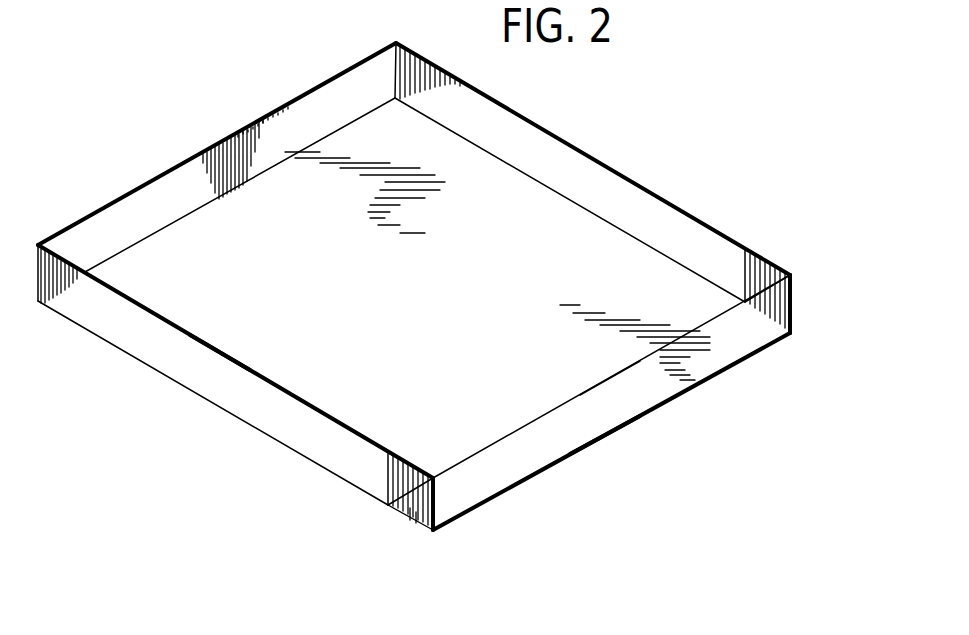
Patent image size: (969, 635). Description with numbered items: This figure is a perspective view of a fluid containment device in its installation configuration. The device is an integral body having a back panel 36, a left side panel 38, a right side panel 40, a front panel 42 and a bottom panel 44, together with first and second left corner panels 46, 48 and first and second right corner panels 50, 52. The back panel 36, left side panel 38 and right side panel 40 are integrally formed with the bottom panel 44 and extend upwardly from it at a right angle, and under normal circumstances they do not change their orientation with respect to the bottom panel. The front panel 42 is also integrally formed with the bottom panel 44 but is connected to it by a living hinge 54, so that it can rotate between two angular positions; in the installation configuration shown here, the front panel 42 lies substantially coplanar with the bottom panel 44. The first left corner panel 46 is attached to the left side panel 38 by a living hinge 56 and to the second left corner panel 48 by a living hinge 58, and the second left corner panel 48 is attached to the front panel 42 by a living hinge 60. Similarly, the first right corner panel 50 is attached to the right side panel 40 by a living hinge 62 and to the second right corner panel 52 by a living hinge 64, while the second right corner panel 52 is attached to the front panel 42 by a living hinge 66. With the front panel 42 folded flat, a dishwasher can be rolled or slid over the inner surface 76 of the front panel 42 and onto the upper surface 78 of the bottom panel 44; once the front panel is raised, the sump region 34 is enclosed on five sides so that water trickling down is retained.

The sump region 34 is at (454, 308).
The back panel 36 is at (167, 190).
The left side panel 38 is at (163, 360).
The right side panel 40 is at (550, 152).
The front panel 42 is at (660, 387).
The bottom panel 44 is at (245, 350).
The first left corner panel 46 is at (388, 463).
The second left corner panel 48 is at (400, 507).
The first right corner panel 50 is at (778, 274).
The second right corner panel 52 is at (792, 308).
The living hinge 54 is at (607, 383).
The living hinge 56 is at (388, 480).
The living hinge 58 is at (437, 495).
The living hinge 60 is at (413, 518).
The living hinge 62 is at (767, 262).
The living hinge 64 is at (792, 291).
The living hinge 66 is at (764, 318).
The inner surface 76 is at (602, 422).
The upper surface 78 is at (413, 294).